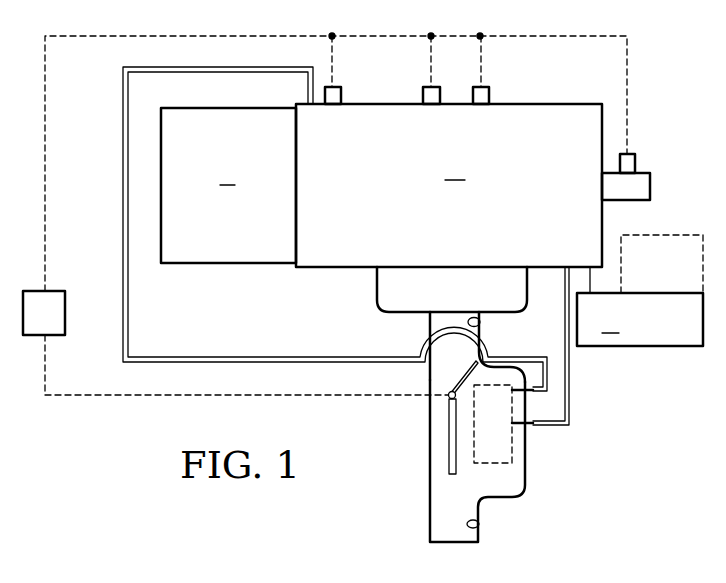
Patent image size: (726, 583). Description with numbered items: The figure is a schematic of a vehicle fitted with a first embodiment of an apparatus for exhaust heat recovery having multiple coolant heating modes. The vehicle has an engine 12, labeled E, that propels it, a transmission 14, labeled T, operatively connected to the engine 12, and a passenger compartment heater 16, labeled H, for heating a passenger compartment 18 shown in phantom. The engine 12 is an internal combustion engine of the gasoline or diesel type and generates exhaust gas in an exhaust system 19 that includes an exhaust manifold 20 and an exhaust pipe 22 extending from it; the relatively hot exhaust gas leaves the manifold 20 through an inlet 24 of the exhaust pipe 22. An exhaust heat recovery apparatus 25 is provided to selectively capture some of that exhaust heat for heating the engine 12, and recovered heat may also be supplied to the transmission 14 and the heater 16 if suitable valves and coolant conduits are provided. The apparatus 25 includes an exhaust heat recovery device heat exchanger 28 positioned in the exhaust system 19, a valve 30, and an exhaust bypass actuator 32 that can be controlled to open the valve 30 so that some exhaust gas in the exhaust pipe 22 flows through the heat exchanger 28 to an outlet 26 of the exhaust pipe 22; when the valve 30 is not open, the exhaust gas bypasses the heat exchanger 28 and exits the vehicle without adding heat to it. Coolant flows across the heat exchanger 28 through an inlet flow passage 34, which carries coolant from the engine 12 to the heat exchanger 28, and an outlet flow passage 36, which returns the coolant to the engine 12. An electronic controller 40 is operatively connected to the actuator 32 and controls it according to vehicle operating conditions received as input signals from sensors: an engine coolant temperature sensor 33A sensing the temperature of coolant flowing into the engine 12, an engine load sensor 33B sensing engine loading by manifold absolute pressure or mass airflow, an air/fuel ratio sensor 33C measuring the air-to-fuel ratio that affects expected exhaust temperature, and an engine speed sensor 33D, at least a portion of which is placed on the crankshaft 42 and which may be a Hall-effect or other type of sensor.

The engine 12 is at (467, 205).
The transmission 14 is at (238, 208).
The passenger compartment heater 16 is at (671, 333).
The passenger compartment 18 is at (674, 275).
The exhaust system 19 is at (372, 298).
The exhaust manifold 20 is at (465, 300).
The exhaust pipe 22 is at (430, 325).
The inlet 24 is at (479, 331).
The exhaust heat recovery apparatus 25 is at (410, 408).
The outlet 26 is at (478, 528).
The exhaust heat recovery device heat exchanger 28 is at (505, 433).
The valve 30 is at (462, 373).
The exhaust bypass actuator 32 is at (448, 405).
The engine coolant temperature sensor 33A is at (334, 86).
The engine load sensor 33B is at (432, 86).
The air/fuel ratio sensor 33C is at (481, 86).
The engine speed sensor 33D is at (628, 153).
The inlet flow passage 34 is at (545, 427).
The outlet flow passage 36 is at (533, 393).
The electronic controller 40 is at (54, 325).
The crankshaft 42 is at (628, 200).